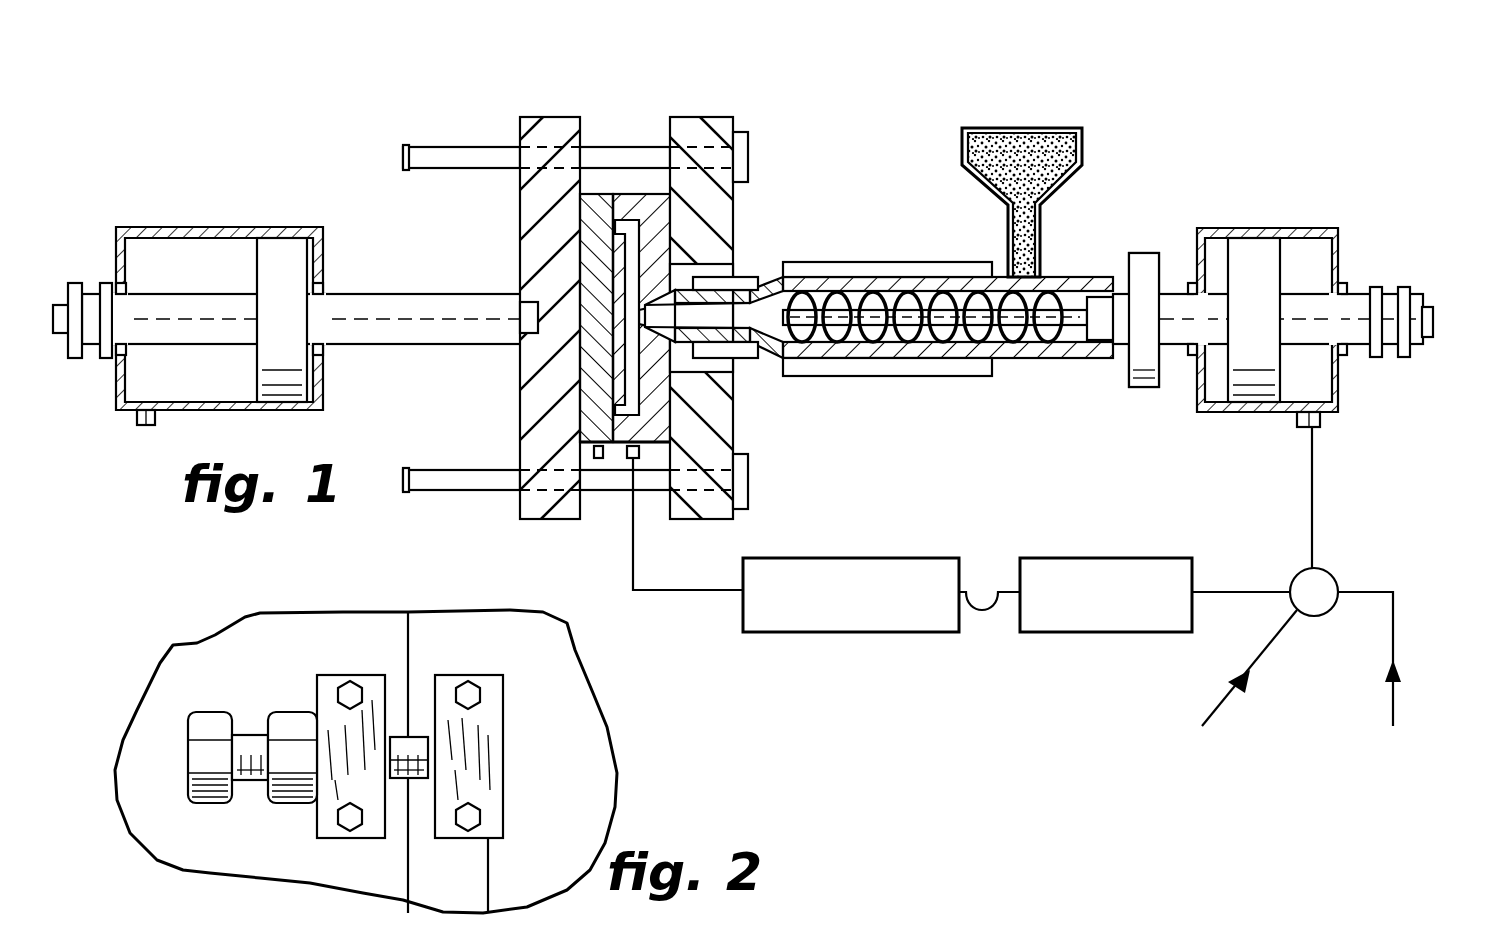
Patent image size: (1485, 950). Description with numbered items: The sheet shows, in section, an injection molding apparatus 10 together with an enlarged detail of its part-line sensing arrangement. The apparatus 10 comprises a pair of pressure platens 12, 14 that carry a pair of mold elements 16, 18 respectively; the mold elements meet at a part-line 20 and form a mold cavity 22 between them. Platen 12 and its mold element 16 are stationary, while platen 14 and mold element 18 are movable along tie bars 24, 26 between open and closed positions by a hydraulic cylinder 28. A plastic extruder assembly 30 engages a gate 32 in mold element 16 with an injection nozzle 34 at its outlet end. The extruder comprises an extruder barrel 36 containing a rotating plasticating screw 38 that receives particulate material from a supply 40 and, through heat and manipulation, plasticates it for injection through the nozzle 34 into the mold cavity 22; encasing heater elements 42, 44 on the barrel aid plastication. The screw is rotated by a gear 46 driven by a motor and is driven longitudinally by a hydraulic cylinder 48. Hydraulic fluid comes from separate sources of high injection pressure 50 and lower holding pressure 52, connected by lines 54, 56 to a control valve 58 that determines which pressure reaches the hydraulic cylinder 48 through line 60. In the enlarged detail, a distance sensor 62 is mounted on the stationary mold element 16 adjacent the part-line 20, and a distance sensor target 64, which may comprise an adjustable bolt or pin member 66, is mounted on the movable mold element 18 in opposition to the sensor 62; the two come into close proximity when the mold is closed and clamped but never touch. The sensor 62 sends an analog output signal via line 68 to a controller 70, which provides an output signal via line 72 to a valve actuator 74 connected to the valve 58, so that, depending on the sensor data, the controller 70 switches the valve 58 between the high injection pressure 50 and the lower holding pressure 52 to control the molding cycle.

In FIG. 1, the injection molding apparatus 10 is at (445, 110).
In FIG. 1, the pressure platen 12 is at (712, 118).
In FIG. 1, the pressure platen 14 is at (536, 118).
In FIG. 1, the mold element 16 is at (653, 196).
In FIG. 2, the mold element 16 is at (478, 632).
In FIG. 1, the mold element 18 is at (596, 194).
In FIG. 2, the mold element 18 is at (260, 650).
In FIG. 1, the part-line 20 is at (625, 197).
In FIG. 2, the part-line 20 is at (408, 637).
In FIG. 1, the mold cavity 22 is at (641, 256).
In FIG. 1, the tie bar 24 is at (412, 141).
In FIG. 1, the tie bar 26 is at (431, 473).
In FIG. 1, the hydraulic cylinder 28 is at (170, 228).
In FIG. 1, the plastic extruder assembly 30 is at (1122, 168).
In FIG. 1, the gate 32 is at (688, 408).
In FIG. 1, the injection nozzle 34 is at (740, 284).
In FIG. 1, the extruder barrel 36 is at (1010, 360).
In FIG. 1, the plasticating screw 38 is at (1072, 300).
In FIG. 1, the supply 40 is at (1023, 140).
In FIG. 1, the heater element 42 is at (850, 377).
In FIG. 1, the heater element 44 is at (740, 360).
In FIG. 1, the gear 46 is at (1148, 255).
In FIG. 1, the hydraulic cylinder 48 is at (1302, 228).
In FIG. 1, the high injection pressure source 50 is at (1169, 750).
In FIG. 1, the lower holding pressure source 52 is at (1393, 745).
In FIG. 1, the line 54 is at (1262, 642).
In FIG. 1, the line 56 is at (1390, 632).
In FIG. 1, the control valve 58 is at (1334, 570).
In FIG. 1, the line 60 is at (1312, 460).
In FIG. 1, the distance sensor 62 is at (600, 458).
In FIG. 2, the distance sensor 62 is at (490, 778).
In FIG. 2, the distance sensor target 64 is at (330, 808).
In FIG. 2, the adjustable bolt or pin member 66 is at (400, 778).
In FIG. 1, the line 68 is at (636, 566).
In FIG. 2, the line 68 is at (490, 880).
In FIG. 1, the controller 70 is at (830, 558).
In FIG. 1, the line 72 is at (970, 578).
In FIG. 1, the valve actuator 74 is at (1140, 558).